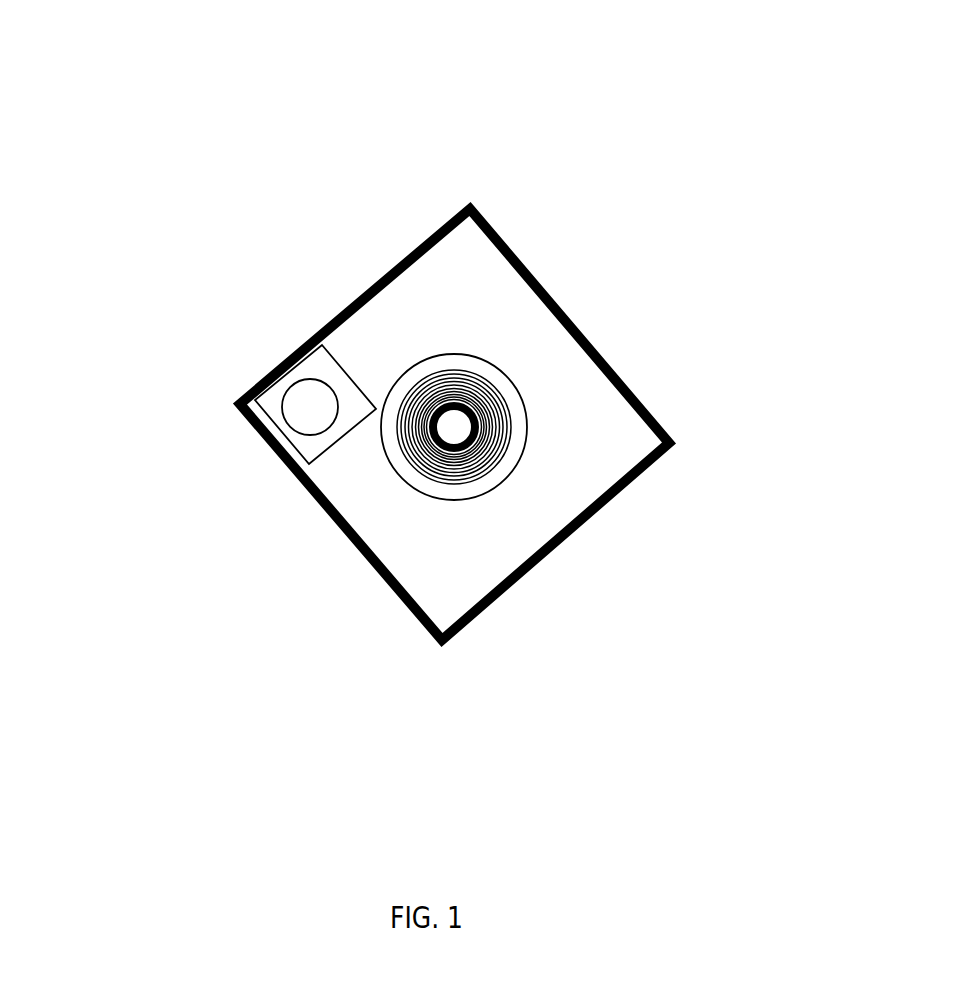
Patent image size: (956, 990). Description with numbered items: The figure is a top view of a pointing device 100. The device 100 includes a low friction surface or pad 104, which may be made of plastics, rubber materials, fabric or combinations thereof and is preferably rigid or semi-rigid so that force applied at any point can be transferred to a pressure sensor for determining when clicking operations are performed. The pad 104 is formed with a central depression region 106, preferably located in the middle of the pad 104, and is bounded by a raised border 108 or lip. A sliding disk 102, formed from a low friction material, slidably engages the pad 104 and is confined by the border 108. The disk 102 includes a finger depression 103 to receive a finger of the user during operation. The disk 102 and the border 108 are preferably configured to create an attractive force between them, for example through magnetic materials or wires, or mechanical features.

The pointing device 100 is at (344, 37).
The sliding disk 102 is at (307, 395).
The finger depression 103 is at (322, 362).
The low friction surface or pad 104 is at (466, 332).
The central depression region 106 is at (508, 412).
The raised border 108 is at (333, 520).